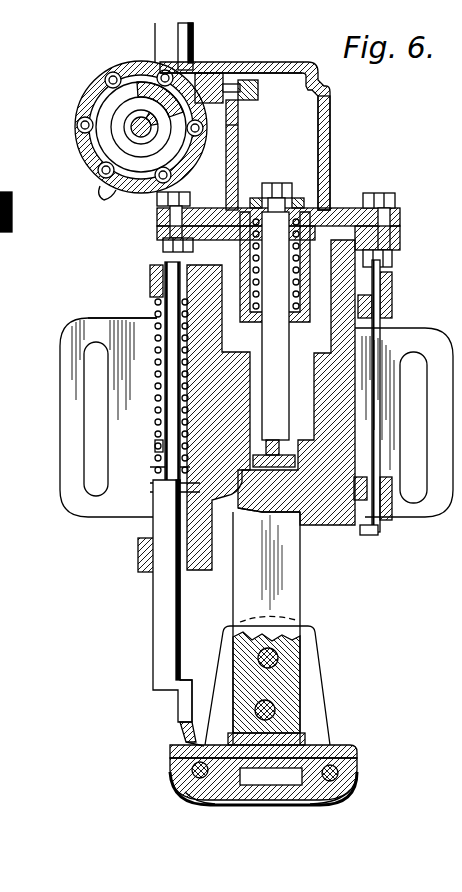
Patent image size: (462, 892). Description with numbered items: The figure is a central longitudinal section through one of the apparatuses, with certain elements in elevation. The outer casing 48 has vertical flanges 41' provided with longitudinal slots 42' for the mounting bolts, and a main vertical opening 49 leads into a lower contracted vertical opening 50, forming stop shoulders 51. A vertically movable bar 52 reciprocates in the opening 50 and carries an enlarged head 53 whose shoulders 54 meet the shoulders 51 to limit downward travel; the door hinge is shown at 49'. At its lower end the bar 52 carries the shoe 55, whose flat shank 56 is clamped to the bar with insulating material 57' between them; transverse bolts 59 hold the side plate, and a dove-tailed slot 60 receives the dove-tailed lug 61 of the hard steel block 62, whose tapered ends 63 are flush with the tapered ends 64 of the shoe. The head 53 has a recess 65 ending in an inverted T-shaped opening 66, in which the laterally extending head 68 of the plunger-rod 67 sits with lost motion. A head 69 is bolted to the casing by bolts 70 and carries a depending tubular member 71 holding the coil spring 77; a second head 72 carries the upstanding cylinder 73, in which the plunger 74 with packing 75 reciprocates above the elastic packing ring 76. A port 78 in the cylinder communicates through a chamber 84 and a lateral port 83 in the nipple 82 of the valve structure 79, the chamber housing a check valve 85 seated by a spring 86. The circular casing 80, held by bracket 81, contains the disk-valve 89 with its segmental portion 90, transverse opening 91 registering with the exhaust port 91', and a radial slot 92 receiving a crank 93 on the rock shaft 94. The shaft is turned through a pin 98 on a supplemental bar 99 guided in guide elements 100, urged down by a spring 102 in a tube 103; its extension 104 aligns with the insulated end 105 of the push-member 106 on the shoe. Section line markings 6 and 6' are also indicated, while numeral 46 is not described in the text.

The section line 6' is at (139, 33).
The laterally extending port 83 is at (180, 64).
The tubular extension or nipple 82 is at (193, 82).
The check valve 85 is at (234, 82).
The spring 86 is at (296, 71).
The port 78 is at (320, 50).
The chamber 84 is at (247, 96).
The radial groove or slot 92 is at (238, 115).
The crank 93 is at (238, 127).
The upstanding cylinder 73 is at (330, 143).
The plunger 74 is at (322, 198).
The second head 72 is at (352, 210).
The packing 75 is at (345, 207).
The end or head 69 is at (380, 200).
The bolts 70 is at (408, 222).
The body 46 is at (408, 228).
The elastic packing ring 76 is at (395, 248).
The depending tubular member 71 is at (311, 268).
The plunger-rod 67 is at (281, 283).
The compressible coil spring 77 is at (298, 303).
The vertical flanges 41' is at (234, 414).
The guide element 100 is at (150, 285).
The tube 103 is at (155, 312).
The compressible coil spring 102 is at (155, 334).
The longitudinal opening or recess 65 is at (160, 392).
The enlarged head 53 is at (172, 411).
The longitudinal slots 42' is at (55, 419).
The main vertical opening 49 is at (86, 451).
The stop shoulders 51 is at (330, 525).
The shoulders 54 is at (372, 502).
The lower contracted vertical opening 50 is at (157, 492).
The pin 98 is at (150, 522).
The flat shank 56 is at (318, 655).
The supplemental vertically movable bar 99 is at (163, 620).
The extension 104 is at (184, 703).
The insulated end 105 is at (180, 722).
The push-member 106 is at (186, 738).
The insulating material 57' is at (195, 694).
The dove-tailed opening or slot 60 is at (350, 741).
The shoe 55 is at (163, 766).
The transverse bolts 59 is at (360, 770).
The dove-tailed lug 61 is at (200, 782).
The hard steel block 62 is at (215, 796).
The tapered ends 63 is at (345, 797).
The tapered ends 64 is at (318, 803).
The vertically movable bar 52 is at (300, 596).
The outer casing 48 is at (238, 516).
The hinge 49' is at (425, 455).
The laterally extending head 68 is at (276, 450).
The inverted T-shaped opening 66 is at (290, 458).
The extension or bracket 81 is at (160, 226).
The circular casing 80 is at (139, 160).
The valve structure 79 is at (108, 191).
The disk-valve 89 is at (110, 148).
The enlarged segmental portion 90 is at (143, 128).
The transverse opening 91 is at (109, 103).
The exhaust port 91' is at (99, 102).
The rock shaft 94 is at (230, 124).
The section line 6 is at (92, 256).